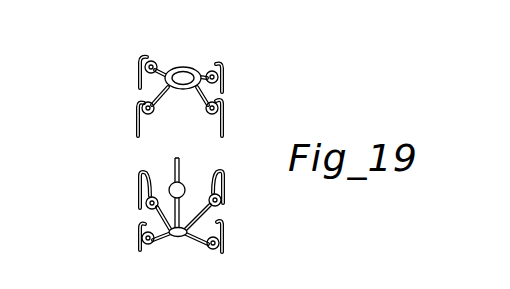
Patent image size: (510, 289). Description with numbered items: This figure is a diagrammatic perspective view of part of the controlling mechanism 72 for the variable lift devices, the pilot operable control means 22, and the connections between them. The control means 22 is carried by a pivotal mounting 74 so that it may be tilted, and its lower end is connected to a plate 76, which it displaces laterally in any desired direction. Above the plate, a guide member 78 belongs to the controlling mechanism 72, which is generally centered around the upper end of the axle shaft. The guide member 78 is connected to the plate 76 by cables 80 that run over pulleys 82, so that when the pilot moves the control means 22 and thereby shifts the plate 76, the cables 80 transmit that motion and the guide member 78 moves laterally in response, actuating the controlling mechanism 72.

The pilot operable control means 22 is at (200, 132).
The controlling mechanism 72 is at (208, 52).
The pivotal mounting 74 is at (187, 185).
The plate 76 is at (220, 242).
The guide member 78 is at (178, 66).
The cables 80 is at (138, 82).
The pulleys 82 is at (225, 71).